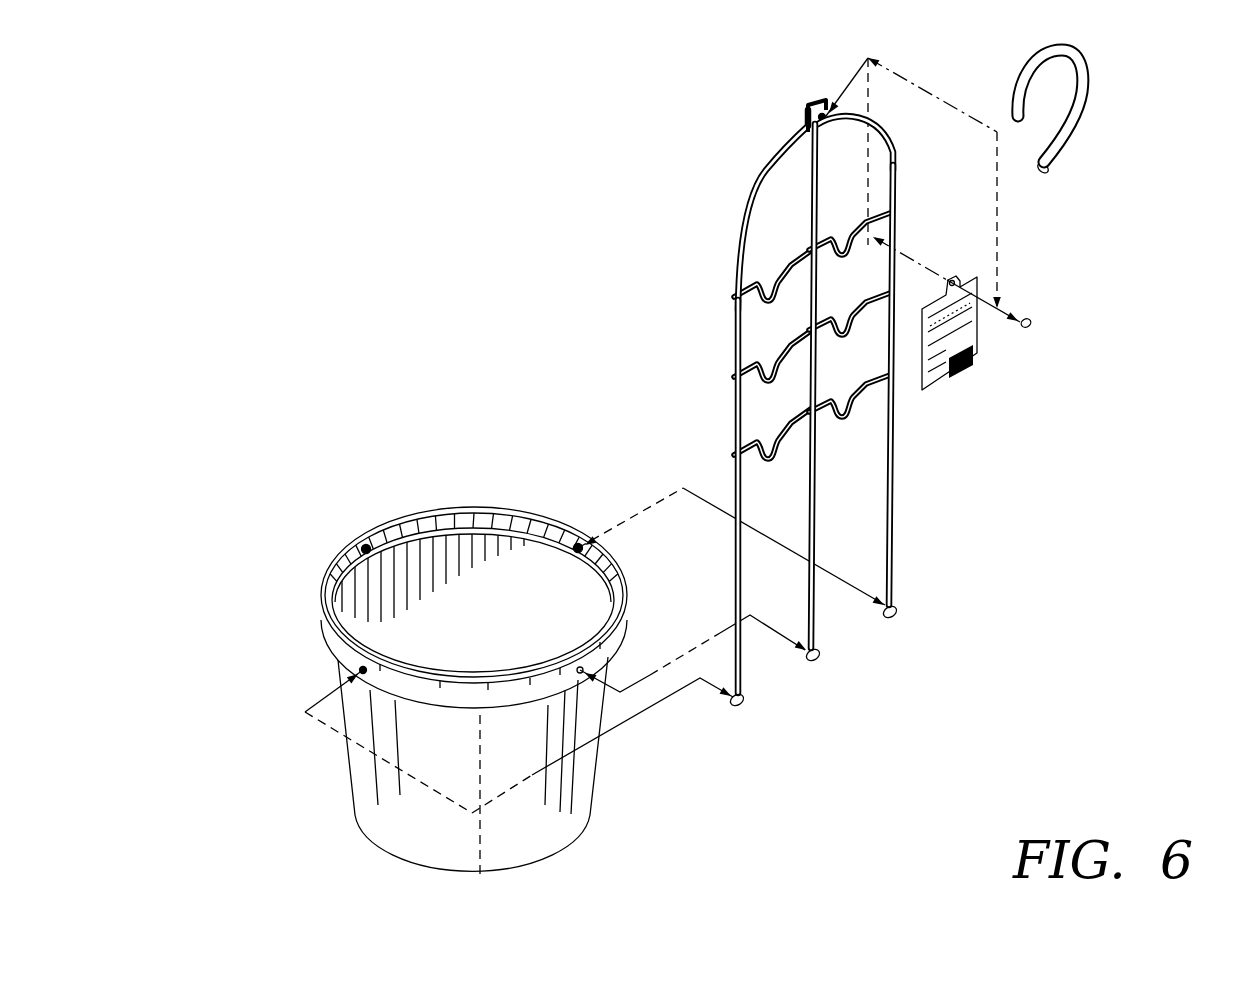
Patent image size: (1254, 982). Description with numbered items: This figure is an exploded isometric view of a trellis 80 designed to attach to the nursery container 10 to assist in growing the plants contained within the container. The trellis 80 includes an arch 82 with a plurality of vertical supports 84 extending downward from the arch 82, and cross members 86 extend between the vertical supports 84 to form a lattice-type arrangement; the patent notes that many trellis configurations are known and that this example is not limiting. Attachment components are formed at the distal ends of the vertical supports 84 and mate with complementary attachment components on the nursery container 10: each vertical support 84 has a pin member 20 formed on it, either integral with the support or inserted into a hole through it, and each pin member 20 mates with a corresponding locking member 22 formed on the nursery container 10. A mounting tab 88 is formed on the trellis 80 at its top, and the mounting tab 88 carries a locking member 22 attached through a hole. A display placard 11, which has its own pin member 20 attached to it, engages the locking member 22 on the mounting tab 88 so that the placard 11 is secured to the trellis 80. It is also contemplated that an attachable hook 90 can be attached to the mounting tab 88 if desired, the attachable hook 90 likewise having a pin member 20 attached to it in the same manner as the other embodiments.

The nursery container 10 is at (303, 790).
The display placard 11 is at (978, 340).
The pin member 20 is at (745, 700).
The locking member 22 is at (369, 545).
The trellis 80 is at (804, 379).
The arch 82 is at (750, 180).
The vertical supports 84 is at (733, 560).
The cross members 86 is at (766, 448).
The mounting tab 88 is at (808, 106).
The attachable hook 90 is at (1083, 125).